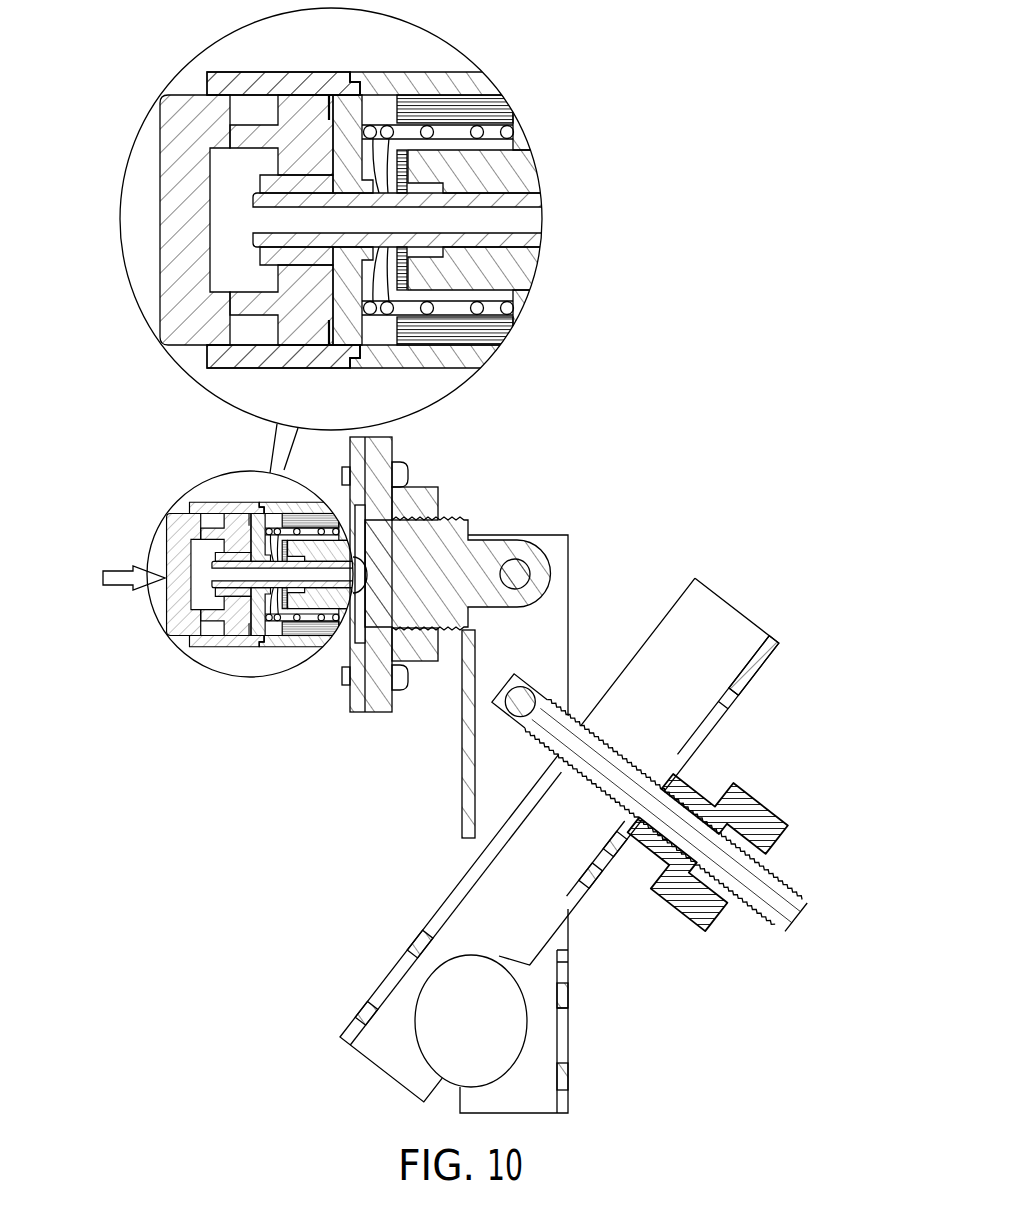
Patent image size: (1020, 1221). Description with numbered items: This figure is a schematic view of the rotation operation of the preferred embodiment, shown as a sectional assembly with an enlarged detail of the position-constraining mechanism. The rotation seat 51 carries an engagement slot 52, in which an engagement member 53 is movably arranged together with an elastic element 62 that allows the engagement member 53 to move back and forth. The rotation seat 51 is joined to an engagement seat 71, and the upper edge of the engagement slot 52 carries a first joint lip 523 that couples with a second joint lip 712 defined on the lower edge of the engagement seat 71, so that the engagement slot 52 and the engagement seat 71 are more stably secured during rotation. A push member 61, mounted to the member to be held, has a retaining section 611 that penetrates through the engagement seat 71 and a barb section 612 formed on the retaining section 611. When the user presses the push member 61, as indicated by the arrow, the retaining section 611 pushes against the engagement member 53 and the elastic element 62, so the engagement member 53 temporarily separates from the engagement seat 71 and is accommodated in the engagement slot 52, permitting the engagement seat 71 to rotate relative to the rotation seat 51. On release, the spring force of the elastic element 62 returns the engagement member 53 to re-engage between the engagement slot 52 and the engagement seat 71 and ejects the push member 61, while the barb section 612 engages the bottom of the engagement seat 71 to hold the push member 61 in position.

The rotation seat 51 is at (362, 712).
The engagement slot 52 is at (445, 367).
The engagement member 53 is at (385, 335).
The push member 61 is at (162, 190).
The retaining section 611 is at (243, 322).
The barb section 612 is at (332, 118).
The elastic element 62 is at (480, 131).
The engagement seat 71 is at (297, 368).
The first joint lip 523 is at (466, 190).
The second joint lip 712 is at (358, 82).